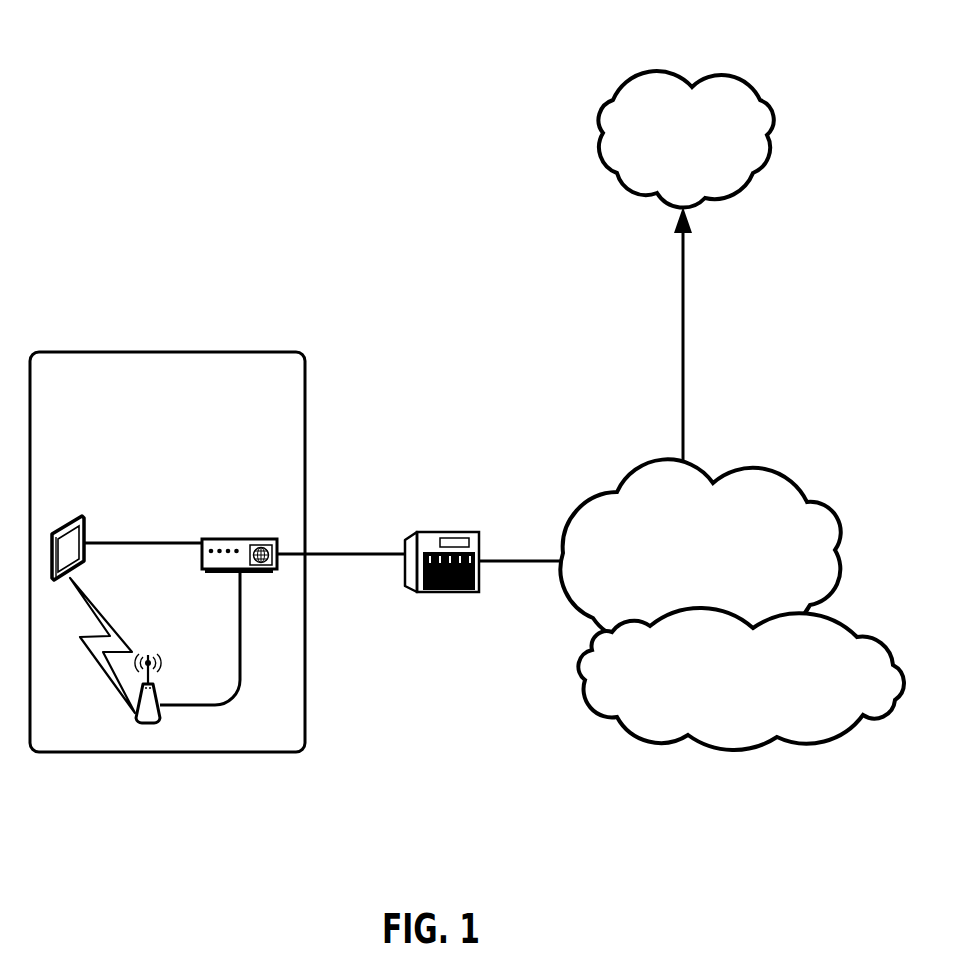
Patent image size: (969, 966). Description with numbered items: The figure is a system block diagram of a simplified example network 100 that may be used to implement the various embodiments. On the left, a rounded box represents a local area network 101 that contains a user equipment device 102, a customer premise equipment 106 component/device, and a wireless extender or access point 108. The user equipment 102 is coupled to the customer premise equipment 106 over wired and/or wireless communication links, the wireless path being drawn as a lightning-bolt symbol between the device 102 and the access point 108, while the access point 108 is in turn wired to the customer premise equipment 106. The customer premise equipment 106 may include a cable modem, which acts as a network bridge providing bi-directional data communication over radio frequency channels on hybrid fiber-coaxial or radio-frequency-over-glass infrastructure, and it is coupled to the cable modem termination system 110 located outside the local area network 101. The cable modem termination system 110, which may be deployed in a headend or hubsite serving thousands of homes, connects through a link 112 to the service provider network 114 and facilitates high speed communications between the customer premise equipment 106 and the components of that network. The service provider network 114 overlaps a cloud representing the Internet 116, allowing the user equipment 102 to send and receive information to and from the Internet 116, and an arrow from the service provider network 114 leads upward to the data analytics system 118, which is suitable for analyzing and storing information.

The network 100 is at (72, 68).
The local area network 101 is at (60, 352).
The user equipment device 102 is at (63, 528).
The customer premise equipment 106 is at (211, 538).
The wireless extender or access point 108 is at (148, 655).
The cable modem termination system 110 is at (452, 532).
The communication link 112 is at (519, 560).
The service provider network 114 is at (759, 467).
The Internet 116 is at (868, 640).
The data analytics system 118 is at (612, 96).